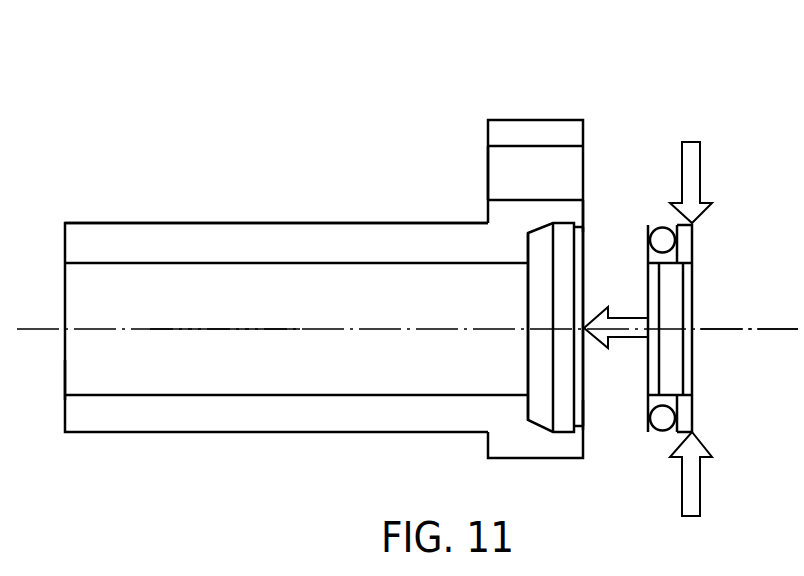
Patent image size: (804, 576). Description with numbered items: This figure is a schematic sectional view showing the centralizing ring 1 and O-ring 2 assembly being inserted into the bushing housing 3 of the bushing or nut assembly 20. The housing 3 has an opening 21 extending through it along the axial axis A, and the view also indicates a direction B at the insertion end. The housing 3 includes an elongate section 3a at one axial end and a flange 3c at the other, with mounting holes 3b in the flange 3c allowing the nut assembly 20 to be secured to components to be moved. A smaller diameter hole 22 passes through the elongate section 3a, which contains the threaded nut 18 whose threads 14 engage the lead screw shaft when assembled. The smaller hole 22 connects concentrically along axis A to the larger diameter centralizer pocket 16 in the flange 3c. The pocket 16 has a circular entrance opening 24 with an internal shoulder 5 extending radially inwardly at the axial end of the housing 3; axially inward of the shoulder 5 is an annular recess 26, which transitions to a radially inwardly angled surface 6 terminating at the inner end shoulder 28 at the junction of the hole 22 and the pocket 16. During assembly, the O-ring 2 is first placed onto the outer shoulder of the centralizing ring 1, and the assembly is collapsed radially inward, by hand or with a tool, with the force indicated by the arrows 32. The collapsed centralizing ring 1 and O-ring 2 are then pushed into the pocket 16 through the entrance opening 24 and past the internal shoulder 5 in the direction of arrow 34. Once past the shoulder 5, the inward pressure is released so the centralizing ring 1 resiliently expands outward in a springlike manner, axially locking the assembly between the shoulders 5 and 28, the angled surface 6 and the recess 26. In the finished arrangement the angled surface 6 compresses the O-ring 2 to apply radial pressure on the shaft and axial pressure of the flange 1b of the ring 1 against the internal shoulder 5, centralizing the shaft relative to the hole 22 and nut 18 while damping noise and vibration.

The bushing or nut assembly 20 is at (681, 84).
The bushing housing 3 is at (527, 120).
The elongate section 3a is at (204, 223).
The mounting holes 3b is at (488, 177).
The flange 3c is at (535, 289).
The threaded nut 18 is at (150, 242).
The smaller diameter hole 22 is at (296, 329).
The threads 14 is at (169, 265).
The centralizer pocket 16 is at (584, 362).
The annular groove or recess 26 is at (584, 272).
The entrance opening 24 is at (587, 408).
The internal shoulder 5 is at (583, 228).
The angled surface 6 is at (542, 225).
The inner end shoulder 28 is at (527, 250).
The centralizing ring 1 is at (706, 308).
The flange 1b is at (693, 247).
The O-ring 2 is at (660, 233).
The arrows 32 is at (703, 173).
The arrow 34 is at (623, 317).
The axial axis A is at (213, 331).
The direction B is at (757, 327).
The opening 21 is at (82, 378).